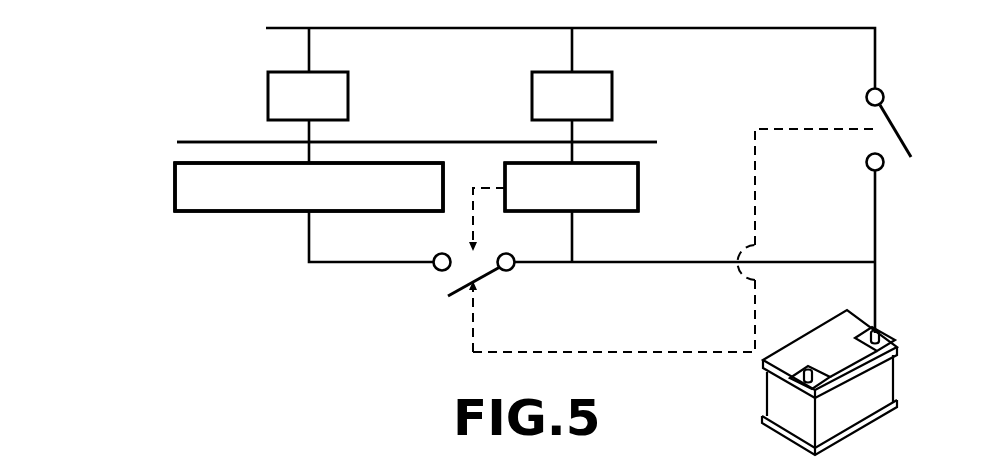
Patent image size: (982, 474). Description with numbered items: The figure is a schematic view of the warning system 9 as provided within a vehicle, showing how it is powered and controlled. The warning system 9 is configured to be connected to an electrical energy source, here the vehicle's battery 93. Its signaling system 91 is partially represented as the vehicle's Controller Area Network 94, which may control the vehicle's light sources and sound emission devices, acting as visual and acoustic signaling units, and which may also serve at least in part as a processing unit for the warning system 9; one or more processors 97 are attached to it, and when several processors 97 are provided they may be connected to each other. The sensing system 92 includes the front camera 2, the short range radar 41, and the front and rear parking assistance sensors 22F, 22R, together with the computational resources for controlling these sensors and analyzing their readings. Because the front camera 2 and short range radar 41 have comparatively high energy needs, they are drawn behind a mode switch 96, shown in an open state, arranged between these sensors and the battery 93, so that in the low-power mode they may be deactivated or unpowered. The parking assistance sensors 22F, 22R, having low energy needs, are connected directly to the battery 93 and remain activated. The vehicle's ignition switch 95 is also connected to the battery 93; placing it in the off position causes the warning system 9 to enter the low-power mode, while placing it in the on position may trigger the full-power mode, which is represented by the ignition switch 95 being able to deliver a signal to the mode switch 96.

The warning system 9 is at (82, 160).
The signaling system 91 is at (178, 134).
The sensing system 92 is at (170, 157).
The battery 93 is at (882, 378).
The Controller Area Network 94 is at (218, 141).
The ignition switch 95 is at (902, 114).
The mode switch 96 is at (429, 298).
The processors 97 is at (440, 96).
The front camera 2 is at (199, 235).
The short range radar 41 is at (309, 187).
The rear parking assistance sensor 22R is at (646, 190).
The front parking assistance sensor 22F is at (571, 187).